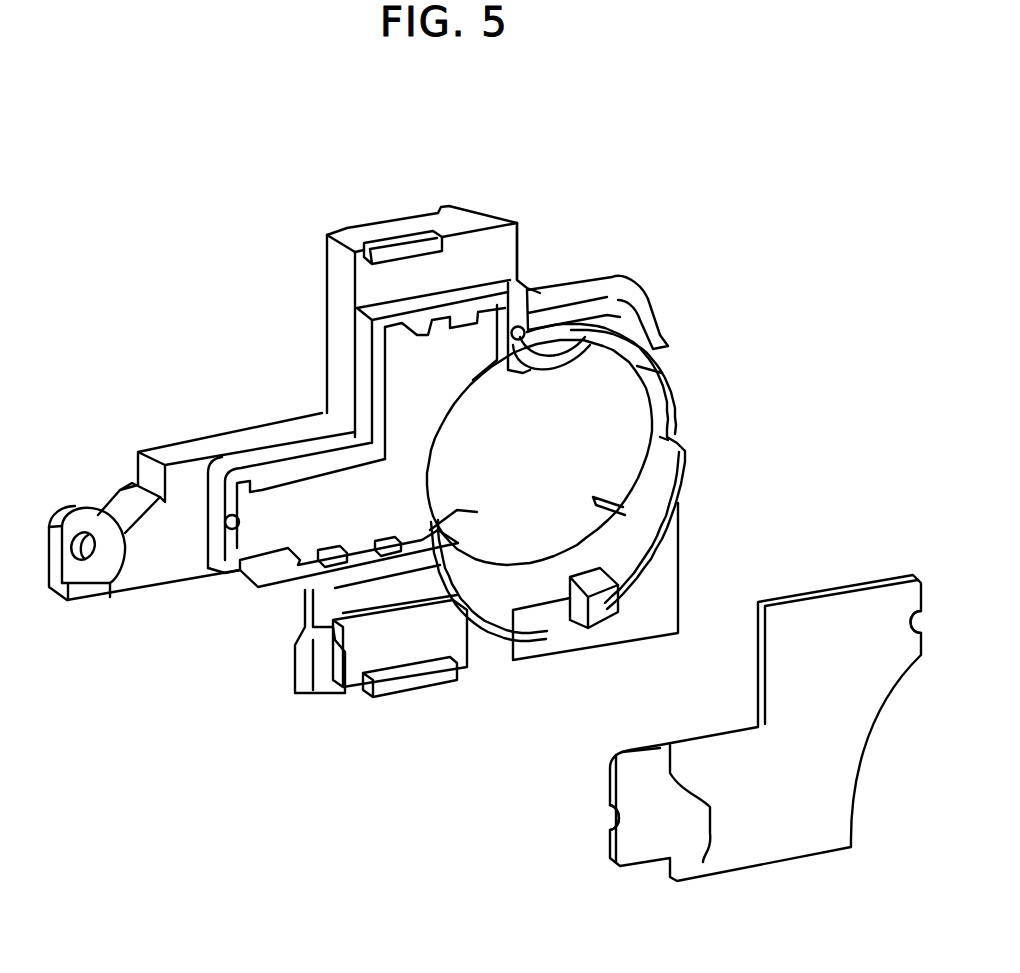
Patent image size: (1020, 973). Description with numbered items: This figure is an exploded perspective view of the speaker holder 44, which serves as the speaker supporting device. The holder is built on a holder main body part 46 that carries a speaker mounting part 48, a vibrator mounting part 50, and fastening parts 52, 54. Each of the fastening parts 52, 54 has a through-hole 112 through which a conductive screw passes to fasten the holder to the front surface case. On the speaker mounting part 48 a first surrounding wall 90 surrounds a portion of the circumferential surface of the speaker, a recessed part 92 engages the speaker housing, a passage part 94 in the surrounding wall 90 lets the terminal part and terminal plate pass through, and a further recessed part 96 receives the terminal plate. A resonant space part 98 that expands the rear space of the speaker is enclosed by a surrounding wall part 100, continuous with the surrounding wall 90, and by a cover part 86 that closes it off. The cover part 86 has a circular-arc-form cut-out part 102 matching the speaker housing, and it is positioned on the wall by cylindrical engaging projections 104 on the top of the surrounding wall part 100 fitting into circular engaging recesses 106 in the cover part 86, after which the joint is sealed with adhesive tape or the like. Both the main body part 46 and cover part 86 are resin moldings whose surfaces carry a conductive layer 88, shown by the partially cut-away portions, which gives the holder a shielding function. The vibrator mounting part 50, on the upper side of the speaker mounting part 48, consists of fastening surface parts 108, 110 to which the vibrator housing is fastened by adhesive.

The speaker holder 44 is at (522, 908).
The holder main body part 46 is at (308, 700).
The speaker mounting part 48 is at (620, 428).
The vibrator mounting part 50 is at (652, 250).
The fastening part 52 is at (632, 331).
The fastening part 54 is at (87, 518).
The cover part 86 is at (616, 864).
The conductive layer 88 is at (337, 697).
The first surrounding wall 90 is at (683, 489).
The recessed part 92 is at (513, 368).
The passage part 94 is at (587, 608).
The recessed part 96 is at (593, 541).
The resonant space part 98 is at (308, 495).
The surrounding wall part 100 is at (362, 352).
The circular-arc-form cut-out part 102 is at (843, 809).
The cylindrical engaging projection 104 is at (518, 324).
The circular engaging recess 106 is at (912, 620).
The fastening surface part 108 is at (612, 290).
The fastening surface part 110 is at (490, 205).
The through-hole 112 is at (88, 540).